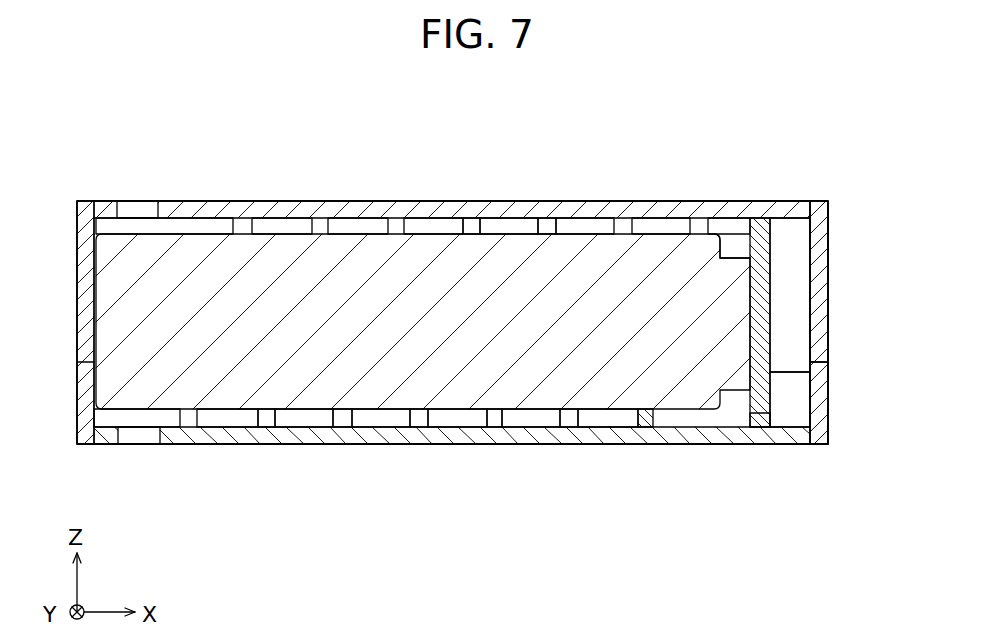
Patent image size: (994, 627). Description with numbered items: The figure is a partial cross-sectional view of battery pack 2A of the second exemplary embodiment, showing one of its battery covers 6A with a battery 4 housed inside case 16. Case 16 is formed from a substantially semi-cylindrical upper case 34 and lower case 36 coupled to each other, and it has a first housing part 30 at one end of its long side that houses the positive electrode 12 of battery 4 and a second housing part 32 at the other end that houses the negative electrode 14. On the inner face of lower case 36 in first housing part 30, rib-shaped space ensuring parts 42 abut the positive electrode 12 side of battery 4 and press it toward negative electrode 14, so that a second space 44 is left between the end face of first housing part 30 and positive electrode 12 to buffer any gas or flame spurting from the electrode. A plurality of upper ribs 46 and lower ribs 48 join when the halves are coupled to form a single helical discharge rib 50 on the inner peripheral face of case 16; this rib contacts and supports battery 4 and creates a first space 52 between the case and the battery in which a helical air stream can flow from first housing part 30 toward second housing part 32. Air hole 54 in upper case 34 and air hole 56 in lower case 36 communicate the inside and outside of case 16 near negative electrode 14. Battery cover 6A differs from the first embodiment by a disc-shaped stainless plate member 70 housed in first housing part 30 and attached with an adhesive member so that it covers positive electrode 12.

The battery pack 2A is at (642, 135).
The battery 4 is at (683, 397).
The battery cover 6A is at (588, 202).
The positive electrode 12 is at (752, 217).
The negative electrode 14 is at (87, 325).
The case 16 is at (888, 335).
The first housing part 30 is at (737, 263).
The second housing part 32 is at (97, 210).
The upper case 34 is at (828, 338).
The lower case 36 is at (828, 382).
The space ensuring part 42 is at (787, 413).
The second space 44 is at (790, 277).
The upper rib 46 is at (547, 222).
The lower rib 48 is at (495, 418).
The discharge rib 50 is at (268, 418).
The first space 52 is at (440, 222).
The air hole 54 is at (128, 210).
The air hole 56 is at (132, 437).
The plate member 70 is at (757, 413).